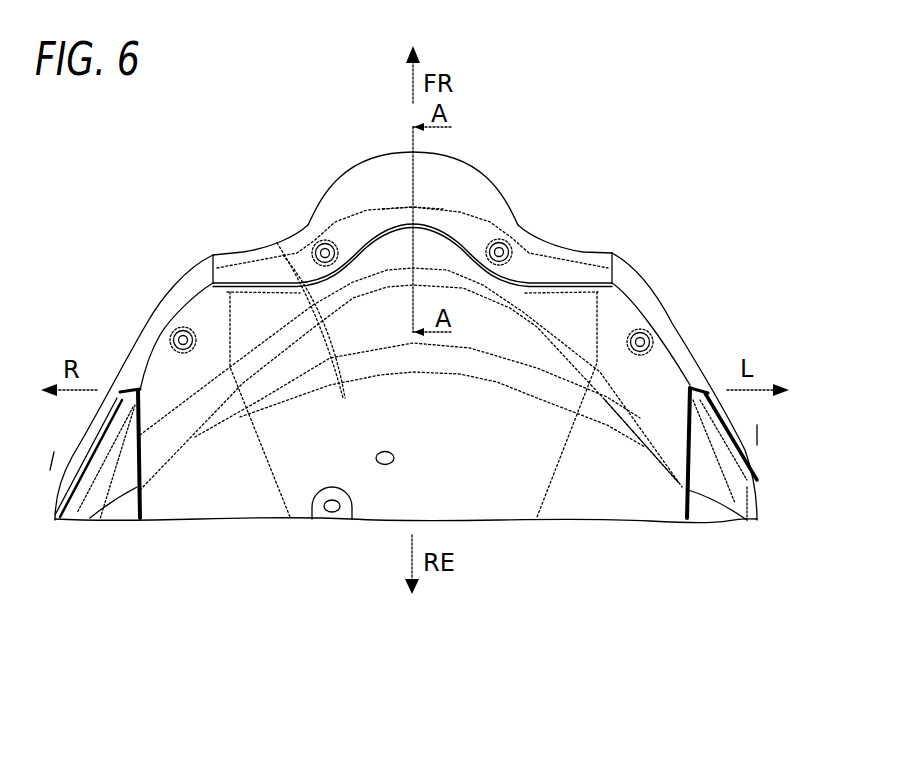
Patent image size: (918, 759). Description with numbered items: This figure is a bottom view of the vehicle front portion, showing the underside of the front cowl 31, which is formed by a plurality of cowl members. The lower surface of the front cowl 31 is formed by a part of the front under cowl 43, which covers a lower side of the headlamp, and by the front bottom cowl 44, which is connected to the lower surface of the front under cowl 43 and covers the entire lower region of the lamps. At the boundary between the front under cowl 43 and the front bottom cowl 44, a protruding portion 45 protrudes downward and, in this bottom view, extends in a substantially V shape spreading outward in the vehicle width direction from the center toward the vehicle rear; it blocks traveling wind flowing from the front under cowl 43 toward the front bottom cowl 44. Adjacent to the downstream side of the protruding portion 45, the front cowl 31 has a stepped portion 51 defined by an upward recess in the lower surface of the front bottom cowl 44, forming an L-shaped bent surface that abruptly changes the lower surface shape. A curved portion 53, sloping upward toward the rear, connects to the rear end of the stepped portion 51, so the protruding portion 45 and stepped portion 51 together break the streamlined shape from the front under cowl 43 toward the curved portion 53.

The front cowl 31 is at (607, 227).
The front under cowl 43 is at (457, 197).
The front bottom cowl 44 is at (643, 380).
The protruding portion 45 is at (470, 250).
The stepped portion 51 is at (400, 247).
The curved portion 53 is at (277, 243).